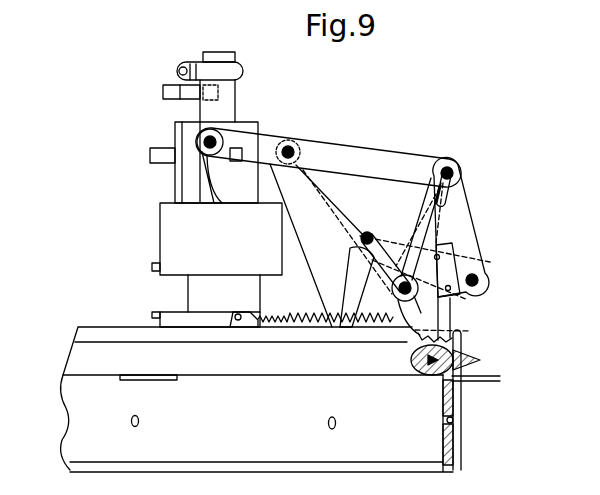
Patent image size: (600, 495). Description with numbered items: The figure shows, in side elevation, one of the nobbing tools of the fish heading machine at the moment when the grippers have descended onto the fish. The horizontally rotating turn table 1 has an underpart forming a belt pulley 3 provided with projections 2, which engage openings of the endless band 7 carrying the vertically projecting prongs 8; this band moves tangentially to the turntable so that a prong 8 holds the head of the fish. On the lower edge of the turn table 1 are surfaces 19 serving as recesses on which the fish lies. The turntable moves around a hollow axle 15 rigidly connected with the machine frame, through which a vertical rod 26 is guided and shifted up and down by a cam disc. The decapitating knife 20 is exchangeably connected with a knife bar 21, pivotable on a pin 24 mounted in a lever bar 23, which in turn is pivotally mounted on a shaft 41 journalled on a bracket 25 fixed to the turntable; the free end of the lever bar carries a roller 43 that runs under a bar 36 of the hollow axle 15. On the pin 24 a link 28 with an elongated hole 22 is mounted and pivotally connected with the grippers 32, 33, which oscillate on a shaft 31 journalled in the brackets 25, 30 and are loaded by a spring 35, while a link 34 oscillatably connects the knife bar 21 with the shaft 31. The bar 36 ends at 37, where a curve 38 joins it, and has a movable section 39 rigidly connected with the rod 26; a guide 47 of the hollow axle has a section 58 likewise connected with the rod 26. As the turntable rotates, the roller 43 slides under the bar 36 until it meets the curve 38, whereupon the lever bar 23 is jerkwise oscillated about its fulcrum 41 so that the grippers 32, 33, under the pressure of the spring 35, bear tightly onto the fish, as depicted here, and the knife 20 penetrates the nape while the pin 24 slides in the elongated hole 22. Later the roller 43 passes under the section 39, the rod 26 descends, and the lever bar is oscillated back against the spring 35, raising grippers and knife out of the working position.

The turn table 1 is at (86, 350).
The projections 2 is at (140, 421).
The belt pulley 3 is at (80, 415).
The endless band 7 is at (456, 446).
The prongs 8 is at (462, 343).
The hollow axle 15 is at (175, 224).
The surfaces 19 is at (128, 380).
The decapitating knife 20 is at (450, 304).
The knife bar 21 is at (466, 240).
The elongated hole 22 is at (449, 198).
The lever bar 23 is at (357, 153).
The pin 24 is at (452, 165).
The bracket 25 is at (323, 283).
The vertical rod 26 is at (232, 116).
The link 28 is at (427, 200).
The bracket 30 is at (353, 259).
The shaft 31 is at (364, 232).
The gripper 32 is at (454, 329).
The gripper 33 is at (422, 307).
The link 34 is at (390, 237).
The spring 35 is at (322, 326).
The bar 36 is at (155, 157).
The end of bar 37 is at (241, 151).
The curve 38 is at (214, 176).
The movable section 39 is at (172, 92).
The shaft 41 is at (293, 147).
The roller 43 is at (179, 131).
The guide 47 is at (190, 292).
The section of guide 58 is at (155, 268).